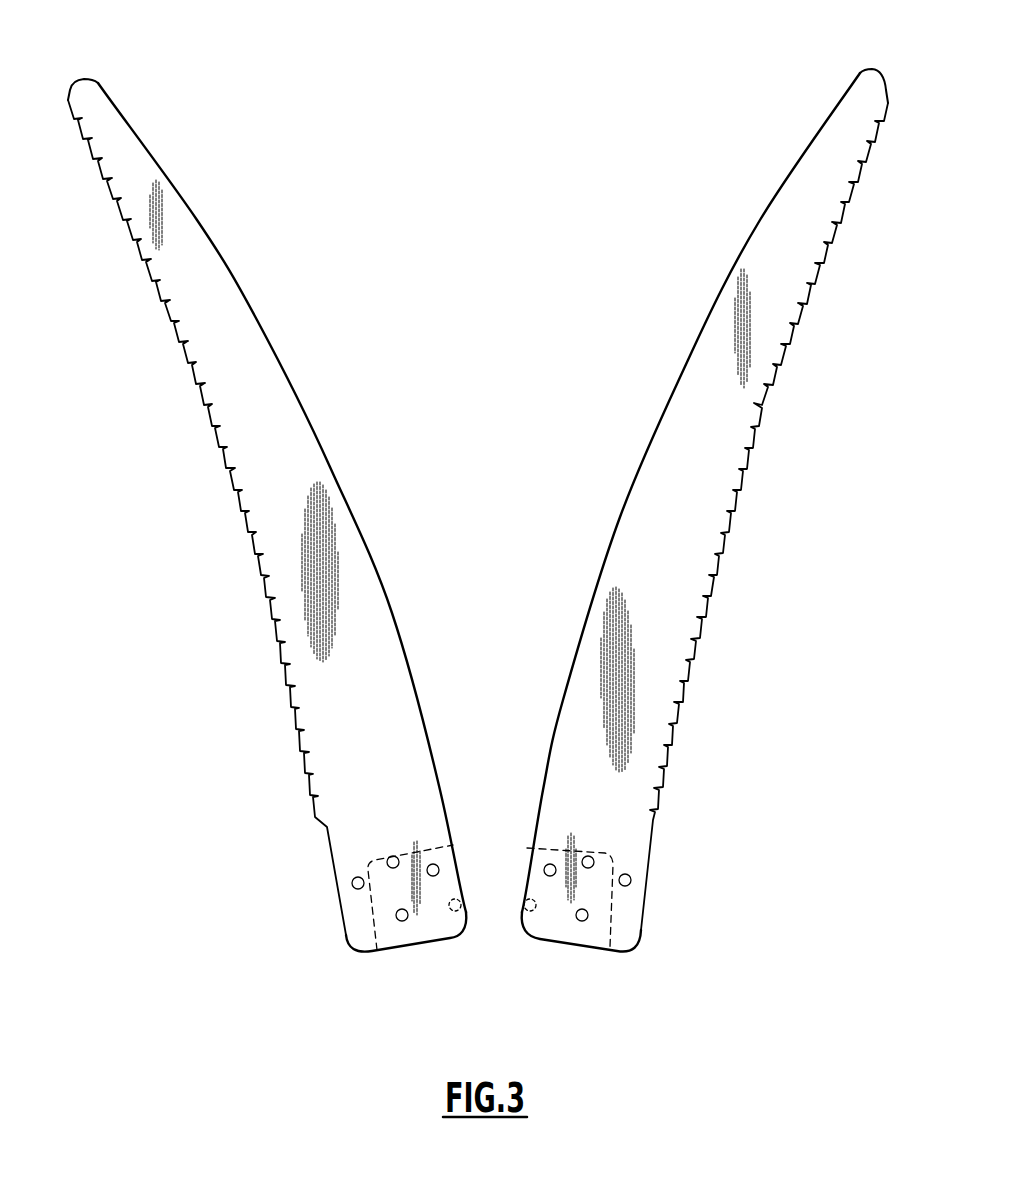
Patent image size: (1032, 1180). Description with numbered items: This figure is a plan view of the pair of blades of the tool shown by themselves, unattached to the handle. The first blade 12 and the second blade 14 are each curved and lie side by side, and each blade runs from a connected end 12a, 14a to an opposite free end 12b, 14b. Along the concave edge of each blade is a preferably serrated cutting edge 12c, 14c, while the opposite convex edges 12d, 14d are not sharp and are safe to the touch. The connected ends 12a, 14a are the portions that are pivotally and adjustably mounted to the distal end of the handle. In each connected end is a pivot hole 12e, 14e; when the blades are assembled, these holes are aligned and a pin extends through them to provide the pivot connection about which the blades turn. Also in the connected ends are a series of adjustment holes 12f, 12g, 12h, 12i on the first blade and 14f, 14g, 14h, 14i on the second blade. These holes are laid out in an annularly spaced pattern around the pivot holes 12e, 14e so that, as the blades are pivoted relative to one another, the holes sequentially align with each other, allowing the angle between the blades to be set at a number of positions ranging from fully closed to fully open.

The first blade 12 is at (675, 514).
The connected end of first blade 12a is at (592, 947).
The free end of first blade 12b is at (872, 68).
The serrated cutting edge of first blade 12c is at (758, 420).
The convex edge of first blade 12d is at (620, 517).
The pivot hole of first blade 12e is at (582, 921).
The adjustment hole of first blade 12f is at (631, 880).
The adjustment hole of first blade 12g is at (588, 856).
The adjustment hole of first blade 12h is at (544, 868).
The adjustment hole of first blade 12i is at (522, 910).
The second blade 14 is at (291, 514).
The connected end of second blade 14a is at (405, 950).
The free end of second blade 14b is at (79, 78).
The serrated cutting edge of second blade 14c is at (225, 473).
The convex edge of second blade 14d is at (330, 467).
The pivot hole of second blade 14e is at (396, 915).
The adjustment hole of second blade 14f is at (352, 883).
The adjustment hole of second blade 14g is at (388, 858).
The adjustment hole of second blade 14h is at (433, 864).
The adjustment hole of second blade 14i is at (462, 896).